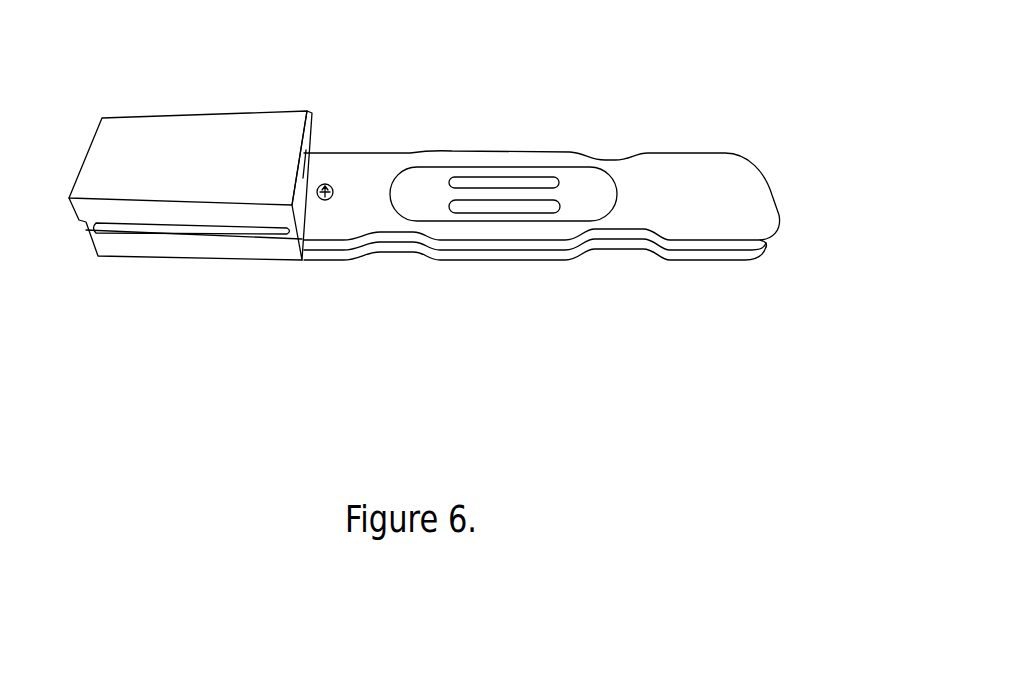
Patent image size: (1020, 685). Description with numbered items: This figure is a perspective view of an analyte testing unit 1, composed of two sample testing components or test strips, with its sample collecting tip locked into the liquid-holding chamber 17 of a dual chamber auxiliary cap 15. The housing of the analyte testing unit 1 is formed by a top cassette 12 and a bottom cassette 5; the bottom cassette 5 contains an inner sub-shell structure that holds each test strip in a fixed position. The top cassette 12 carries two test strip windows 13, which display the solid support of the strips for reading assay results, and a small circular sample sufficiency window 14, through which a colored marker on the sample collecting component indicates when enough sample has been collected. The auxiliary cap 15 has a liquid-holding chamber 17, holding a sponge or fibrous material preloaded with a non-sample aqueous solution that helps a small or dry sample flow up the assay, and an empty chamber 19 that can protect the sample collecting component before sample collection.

The analyte testing unit 1 is at (668, 152).
The bottom cassette 5 is at (745, 258).
The top cassette 12 is at (767, 247).
The test strip windows 13 is at (497, 180).
The sample sufficiency window 14 is at (325, 185).
The auxiliary cap 15 is at (192, 130).
The liquid-holding chamber 17 is at (132, 247).
The empty chamber 19 is at (310, 113).